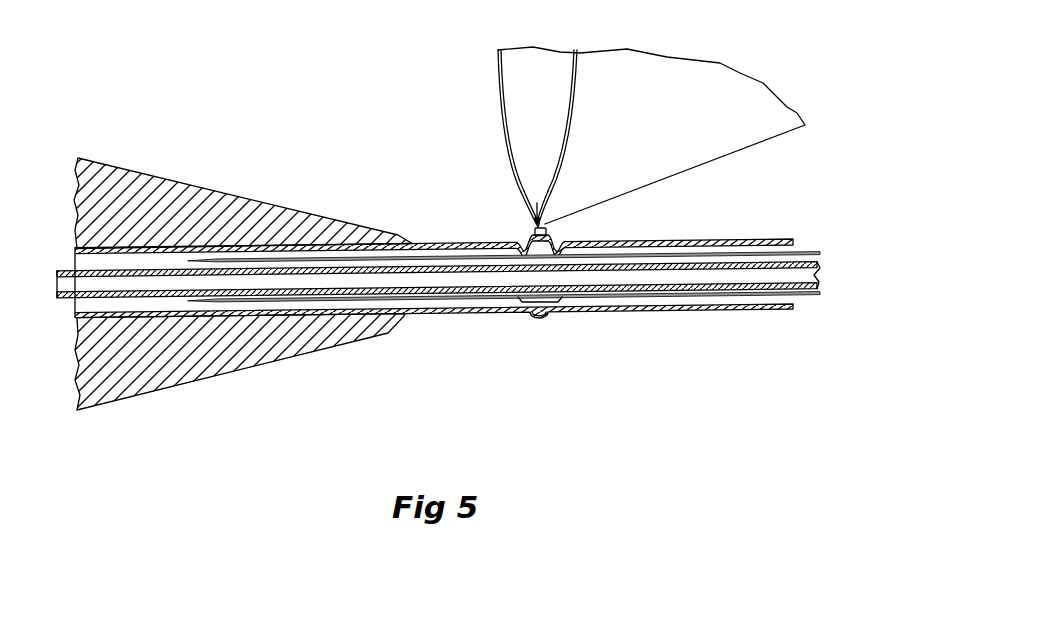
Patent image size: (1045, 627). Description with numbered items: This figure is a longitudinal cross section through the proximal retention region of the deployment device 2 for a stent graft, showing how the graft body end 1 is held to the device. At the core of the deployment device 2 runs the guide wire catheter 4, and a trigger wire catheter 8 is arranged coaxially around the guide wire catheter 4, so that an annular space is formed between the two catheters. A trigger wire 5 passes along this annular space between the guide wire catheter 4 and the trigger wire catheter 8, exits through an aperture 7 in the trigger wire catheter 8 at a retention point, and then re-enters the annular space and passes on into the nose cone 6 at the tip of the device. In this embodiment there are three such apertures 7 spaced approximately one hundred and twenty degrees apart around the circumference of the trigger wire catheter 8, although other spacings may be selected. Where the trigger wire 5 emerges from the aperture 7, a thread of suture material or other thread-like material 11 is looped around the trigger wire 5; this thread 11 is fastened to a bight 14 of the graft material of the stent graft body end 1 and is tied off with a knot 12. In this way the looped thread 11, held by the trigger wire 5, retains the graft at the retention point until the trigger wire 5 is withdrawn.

The stent graft body end 1 is at (503, 145).
The deployment device 2 is at (333, 183).
The guide wire catheter 4 is at (747, 291).
The trigger wire 5 is at (526, 243).
The nose cone 6 is at (380, 332).
The aperture 7 is at (542, 233).
The trigger wire catheter 8 is at (678, 312).
The thread of suture material 11 is at (547, 232).
The knot 12 is at (525, 213).
The bight 14 is at (533, 223).